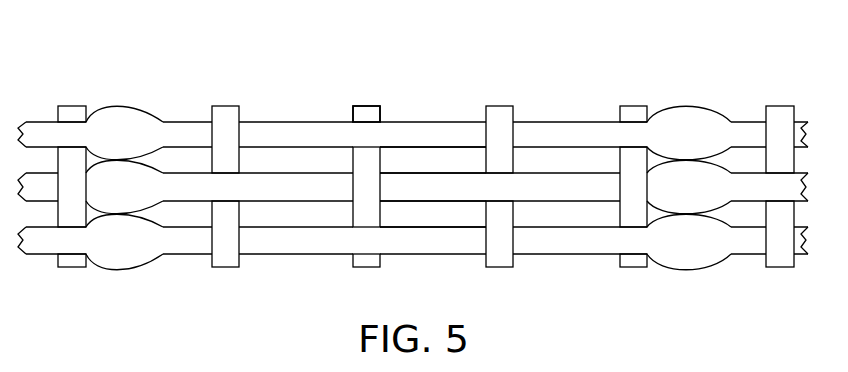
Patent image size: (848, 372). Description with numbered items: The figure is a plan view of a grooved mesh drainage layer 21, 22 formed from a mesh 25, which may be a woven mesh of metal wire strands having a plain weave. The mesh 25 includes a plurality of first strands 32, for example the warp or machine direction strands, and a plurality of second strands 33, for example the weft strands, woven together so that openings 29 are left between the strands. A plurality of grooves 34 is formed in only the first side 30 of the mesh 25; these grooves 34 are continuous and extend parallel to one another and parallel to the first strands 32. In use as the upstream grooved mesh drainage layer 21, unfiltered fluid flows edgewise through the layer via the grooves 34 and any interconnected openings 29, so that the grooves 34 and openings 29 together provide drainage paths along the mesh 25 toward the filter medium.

The upstream grooved mesh drainage layer 21 is at (367, 117).
The grooved mesh drainage layer 22 is at (366, 114).
The mesh 25 is at (560, 128).
The interconnected openings 29 is at (438, 215).
The first side 30 is at (190, 187).
The first strands 32 is at (225, 117).
The second strands 33 is at (312, 183).
The grooves 34 is at (121, 127).